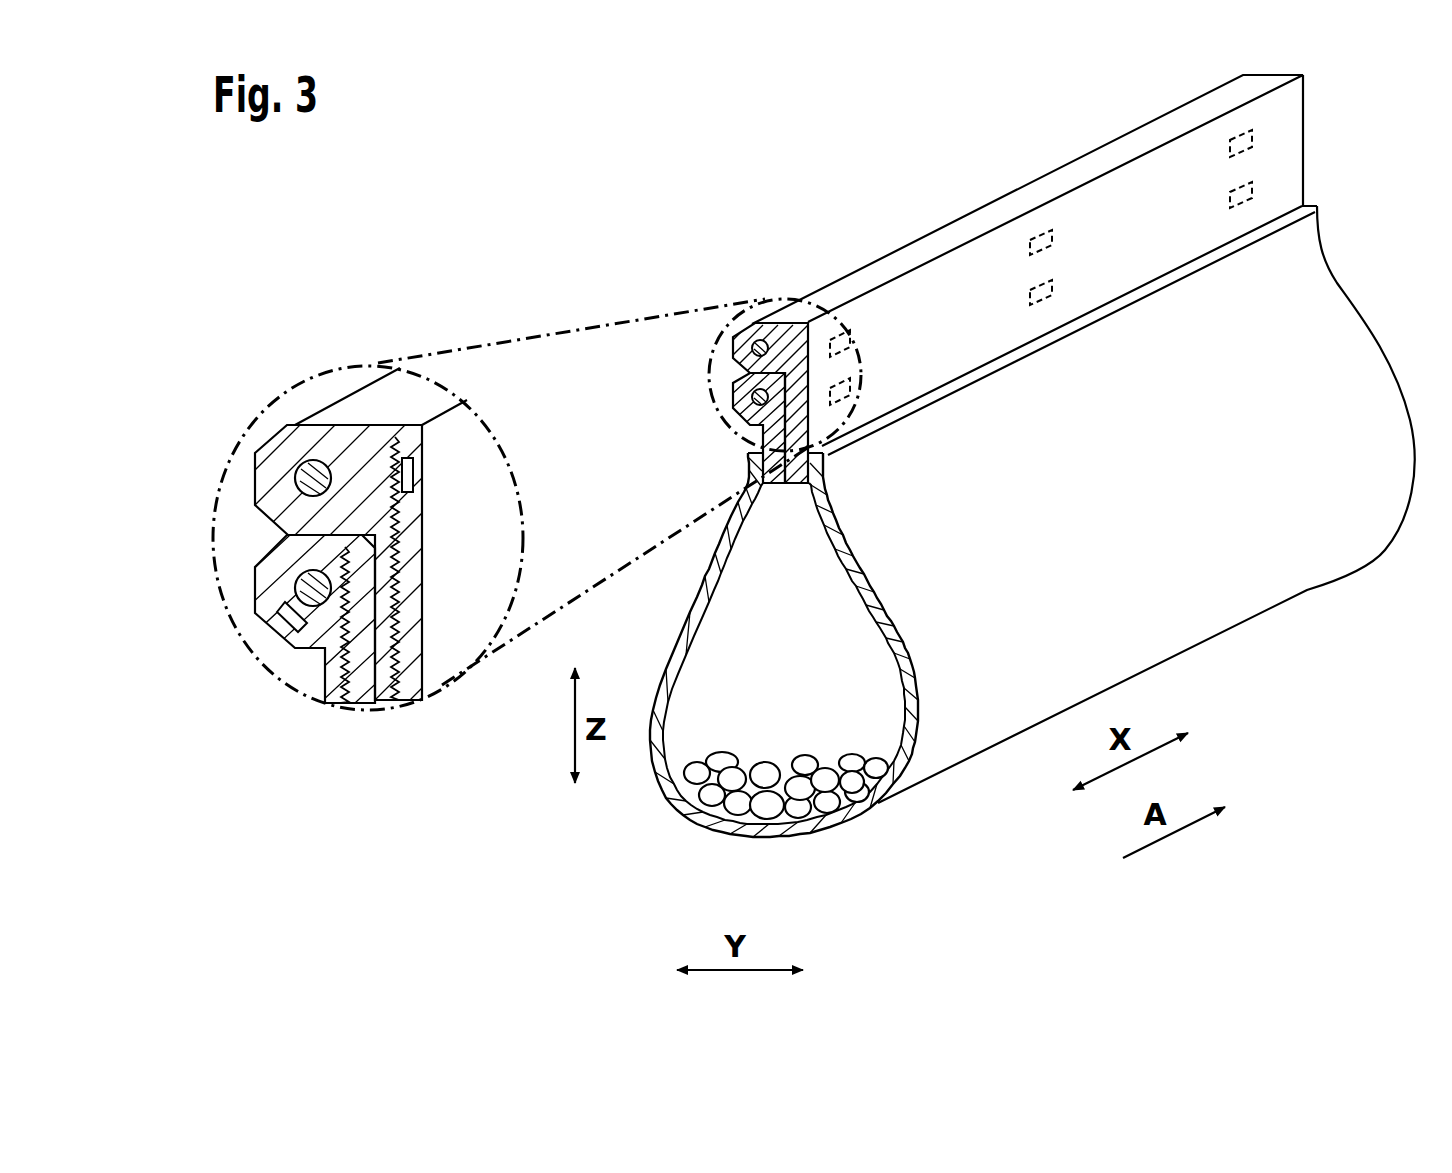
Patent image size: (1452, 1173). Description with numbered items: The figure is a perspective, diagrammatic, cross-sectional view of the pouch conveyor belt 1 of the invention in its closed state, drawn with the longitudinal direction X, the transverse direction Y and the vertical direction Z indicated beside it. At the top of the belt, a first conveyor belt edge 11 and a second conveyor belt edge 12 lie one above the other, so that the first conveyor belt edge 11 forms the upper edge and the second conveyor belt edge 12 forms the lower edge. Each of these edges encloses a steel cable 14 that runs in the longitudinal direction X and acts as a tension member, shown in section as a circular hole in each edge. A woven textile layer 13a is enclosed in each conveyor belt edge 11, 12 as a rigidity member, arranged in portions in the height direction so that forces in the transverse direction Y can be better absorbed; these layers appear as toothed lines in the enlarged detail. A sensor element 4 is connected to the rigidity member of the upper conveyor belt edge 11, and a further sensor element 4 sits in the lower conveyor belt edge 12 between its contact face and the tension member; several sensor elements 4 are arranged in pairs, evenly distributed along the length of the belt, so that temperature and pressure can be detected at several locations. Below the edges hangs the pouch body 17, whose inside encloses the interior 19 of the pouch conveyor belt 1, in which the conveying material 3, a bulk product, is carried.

The pouch conveyor belt 1 is at (575, 305).
The conveying material 3 is at (708, 790).
The sensor element 4 is at (414, 475).
The first conveyor belt edge 11 is at (258, 457).
The second conveyor belt edge 12 is at (258, 598).
The woven textile layer 13a is at (343, 680).
The steel cable 14 is at (303, 483).
The pouch body 17 is at (692, 622).
The interior 19 is at (757, 724).